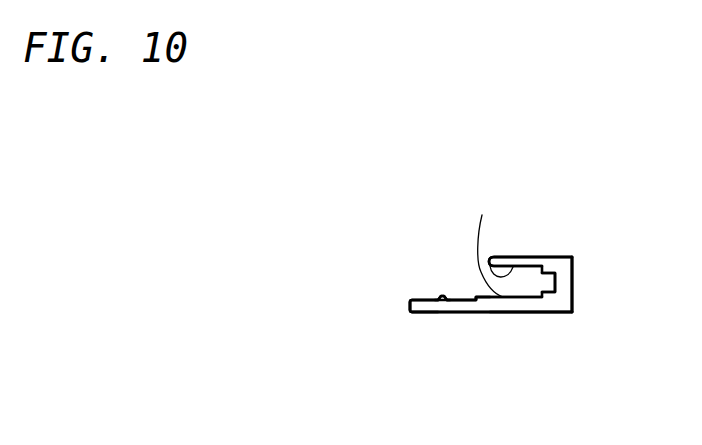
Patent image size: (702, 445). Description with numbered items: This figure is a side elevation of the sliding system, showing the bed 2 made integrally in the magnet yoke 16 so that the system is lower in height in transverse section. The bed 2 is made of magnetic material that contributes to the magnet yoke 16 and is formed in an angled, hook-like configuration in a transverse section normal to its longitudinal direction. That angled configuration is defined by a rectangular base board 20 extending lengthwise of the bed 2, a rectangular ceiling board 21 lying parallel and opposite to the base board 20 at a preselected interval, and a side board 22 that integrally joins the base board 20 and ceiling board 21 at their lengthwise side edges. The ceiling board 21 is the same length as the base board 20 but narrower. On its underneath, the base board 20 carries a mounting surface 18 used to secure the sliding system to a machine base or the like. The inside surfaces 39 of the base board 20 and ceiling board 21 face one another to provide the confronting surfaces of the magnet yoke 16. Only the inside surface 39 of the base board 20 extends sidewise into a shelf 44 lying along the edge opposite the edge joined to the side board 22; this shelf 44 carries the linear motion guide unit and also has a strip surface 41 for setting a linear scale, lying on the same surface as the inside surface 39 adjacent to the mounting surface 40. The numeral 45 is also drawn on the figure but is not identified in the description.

The bed 2 is at (578, 249).
The magnet yoke 16 is at (510, 257).
The mounting surface 18 is at (472, 313).
The base board 20 is at (492, 312).
The ceiling board 21 is at (520, 262).
The side board 22 is at (565, 283).
The inside surface 39 is at (488, 242).
The mounting surface 40 is at (427, 298).
The strip surface 41 is at (457, 300).
The shelf 44 is at (439, 310).
The inner web 45 is at (528, 280).